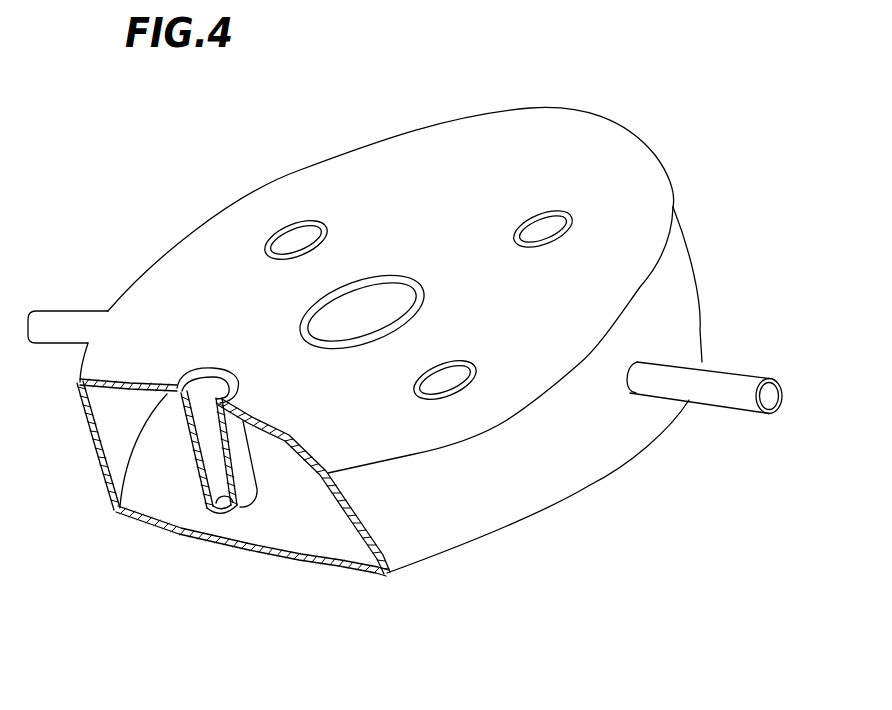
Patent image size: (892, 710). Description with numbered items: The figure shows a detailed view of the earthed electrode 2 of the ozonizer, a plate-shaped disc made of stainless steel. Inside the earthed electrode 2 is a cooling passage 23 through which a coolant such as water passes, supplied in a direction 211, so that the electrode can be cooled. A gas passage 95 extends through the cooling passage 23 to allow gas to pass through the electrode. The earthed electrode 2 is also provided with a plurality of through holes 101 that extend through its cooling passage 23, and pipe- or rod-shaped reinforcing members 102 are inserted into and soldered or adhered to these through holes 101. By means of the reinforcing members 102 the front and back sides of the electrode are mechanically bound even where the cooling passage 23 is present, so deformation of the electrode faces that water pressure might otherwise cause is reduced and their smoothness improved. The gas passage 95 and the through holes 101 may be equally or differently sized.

The earthed electrode 2 is at (503, 535).
The cooling passage 23 is at (285, 503).
The gas passage 95 is at (383, 279).
The through holes 101 is at (447, 375).
The reinforcing members 102 is at (467, 363).
The direction 211 is at (788, 400).